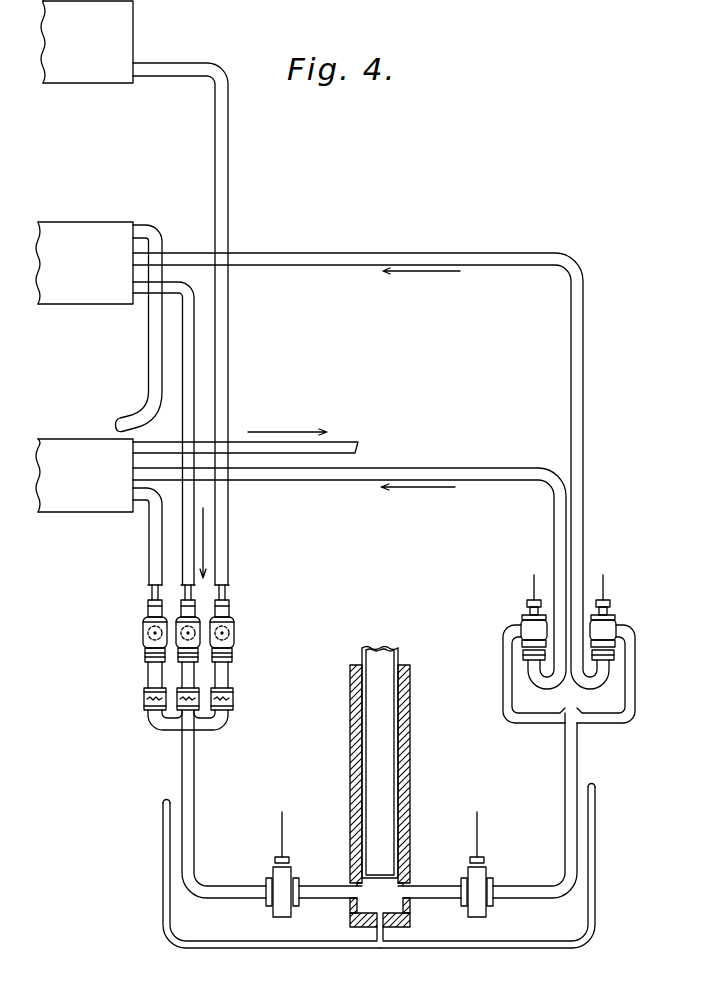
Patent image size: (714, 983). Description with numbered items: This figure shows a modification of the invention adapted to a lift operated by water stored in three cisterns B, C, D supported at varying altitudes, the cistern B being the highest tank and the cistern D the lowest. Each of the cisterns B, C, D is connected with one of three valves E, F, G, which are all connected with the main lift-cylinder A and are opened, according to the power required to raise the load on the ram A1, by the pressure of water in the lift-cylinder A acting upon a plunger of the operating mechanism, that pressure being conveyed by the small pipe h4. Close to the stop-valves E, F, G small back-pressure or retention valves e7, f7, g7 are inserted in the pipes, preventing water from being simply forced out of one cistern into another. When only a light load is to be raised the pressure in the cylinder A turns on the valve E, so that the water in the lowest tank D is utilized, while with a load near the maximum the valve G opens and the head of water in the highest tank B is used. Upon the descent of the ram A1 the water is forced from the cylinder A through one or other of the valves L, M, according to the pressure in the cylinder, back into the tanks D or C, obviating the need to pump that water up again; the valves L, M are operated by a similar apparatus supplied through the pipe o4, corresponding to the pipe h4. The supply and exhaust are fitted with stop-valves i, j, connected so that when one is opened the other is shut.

The cistern B is at (87, 41).
The cistern C is at (84, 263).
The cistern D is at (84, 475).
The valve E is at (139, 636).
The valve F is at (182, 630).
The valve G is at (236, 636).
The back-pressure or retention valve e7 is at (142, 700).
The back-pressure or retention valve f7 is at (188, 704).
The back-pressure or retention valve g7 is at (230, 700).
The valve L is at (521, 624).
The valve M is at (617, 622).
The main lift-cylinder A is at (409, 817).
The ram A1 is at (380, 763).
The stop-valve i is at (278, 874).
The stop-valve j is at (479, 874).
The pipe h4 is at (320, 946).
The pipe o4 is at (450, 947).